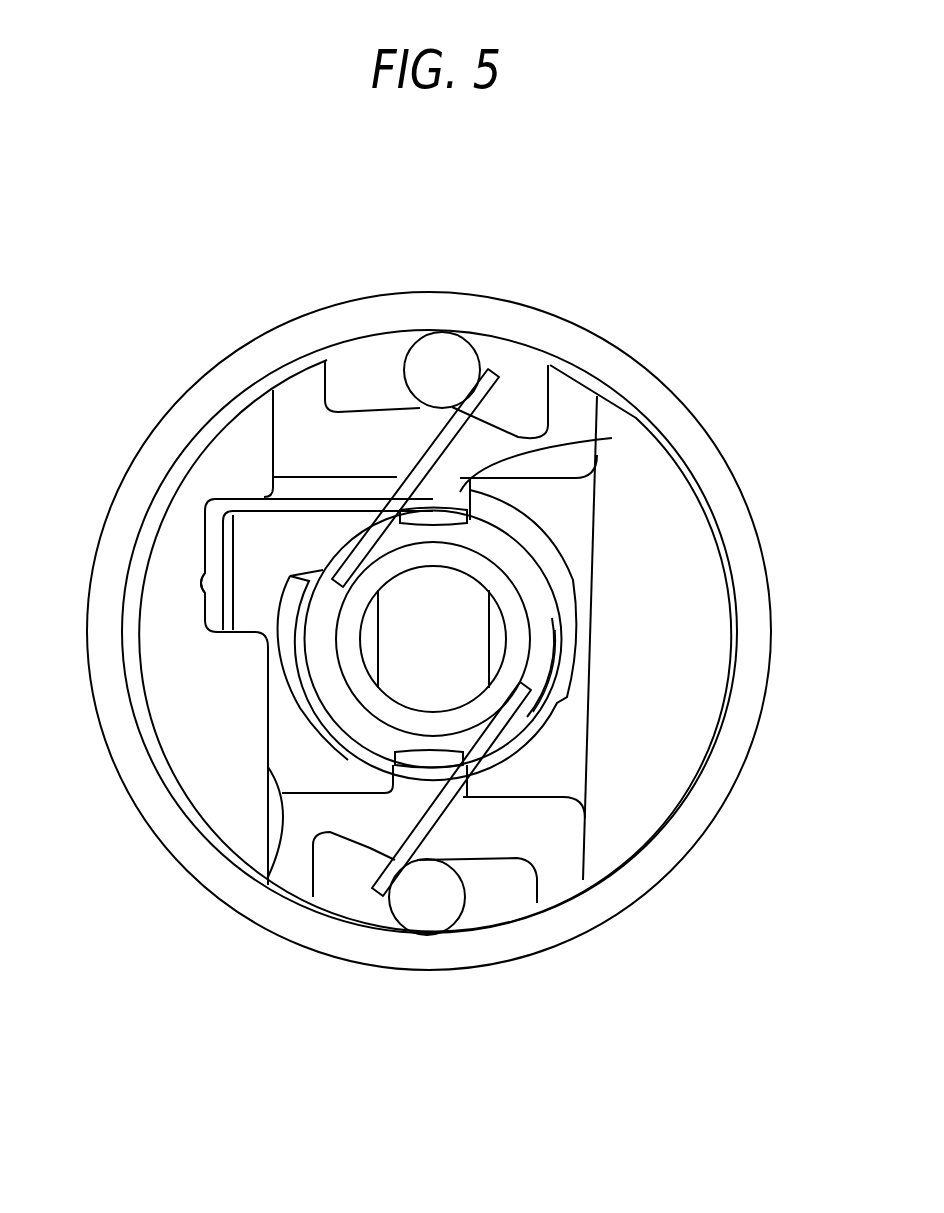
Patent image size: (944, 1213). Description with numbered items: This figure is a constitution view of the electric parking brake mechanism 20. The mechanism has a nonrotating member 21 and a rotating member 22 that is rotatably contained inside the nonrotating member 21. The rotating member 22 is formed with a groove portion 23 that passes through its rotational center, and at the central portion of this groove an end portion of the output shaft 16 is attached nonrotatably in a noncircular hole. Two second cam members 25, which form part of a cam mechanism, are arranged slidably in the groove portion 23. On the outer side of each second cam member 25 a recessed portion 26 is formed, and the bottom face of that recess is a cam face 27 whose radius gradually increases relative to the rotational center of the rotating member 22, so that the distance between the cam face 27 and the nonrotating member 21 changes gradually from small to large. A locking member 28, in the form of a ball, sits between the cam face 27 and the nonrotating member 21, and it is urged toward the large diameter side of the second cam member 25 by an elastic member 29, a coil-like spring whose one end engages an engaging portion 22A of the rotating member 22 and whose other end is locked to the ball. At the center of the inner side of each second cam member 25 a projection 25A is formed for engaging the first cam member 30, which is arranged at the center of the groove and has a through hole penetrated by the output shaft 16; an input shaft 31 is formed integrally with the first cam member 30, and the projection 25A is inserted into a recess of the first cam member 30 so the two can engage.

The parking brake mechanism 20 is at (266, 313).
The nonrotating member 21 is at (760, 609).
The rotating member 22 is at (665, 759).
The engaging portion 22A is at (202, 593).
The groove portion 23 is at (269, 885).
The second cam member 25 is at (297, 432).
The projection 25A is at (612, 438).
The recessed portion 26 is at (521, 397).
The cam face 27 is at (375, 408).
The locking member 28 is at (445, 355).
The elastic member 29 is at (350, 545).
The output shaft 16 is at (388, 655).
The first cam member 30 is at (377, 705).
The input shaft 31 is at (300, 720).